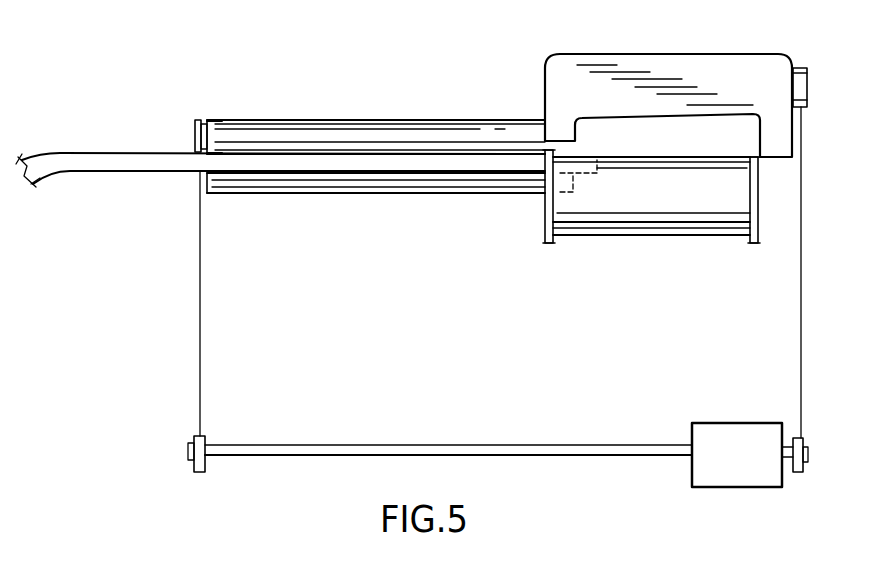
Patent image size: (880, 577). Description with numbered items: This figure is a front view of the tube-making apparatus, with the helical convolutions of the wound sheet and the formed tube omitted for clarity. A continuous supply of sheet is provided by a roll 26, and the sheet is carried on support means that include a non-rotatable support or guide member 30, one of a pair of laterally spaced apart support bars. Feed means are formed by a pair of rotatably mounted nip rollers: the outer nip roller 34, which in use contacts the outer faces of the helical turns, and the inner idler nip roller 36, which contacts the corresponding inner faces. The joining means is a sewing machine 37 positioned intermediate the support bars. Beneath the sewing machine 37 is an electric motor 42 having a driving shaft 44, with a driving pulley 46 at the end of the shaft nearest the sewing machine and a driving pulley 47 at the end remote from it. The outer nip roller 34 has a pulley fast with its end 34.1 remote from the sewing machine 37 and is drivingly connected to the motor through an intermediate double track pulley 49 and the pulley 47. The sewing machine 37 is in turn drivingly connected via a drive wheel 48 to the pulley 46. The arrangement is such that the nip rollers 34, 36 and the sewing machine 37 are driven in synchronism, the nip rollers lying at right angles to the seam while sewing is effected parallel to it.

The roll 26 is at (667, 215).
The support or guide member 30 is at (140, 160).
The outer nip roller 34 is at (388, 128).
The end of outer nip roller 34.1 is at (222, 137).
The inner idler nip roller 36 is at (340, 182).
The sewing machine 37 is at (647, 78).
The electric motor 42 is at (747, 477).
The driving shaft 44 is at (528, 460).
The driving pulley 46 is at (805, 462).
The driving pulley 47 is at (197, 465).
The drive wheel 48 is at (807, 88).
The intermediate double track pulley 49 is at (194, 137).